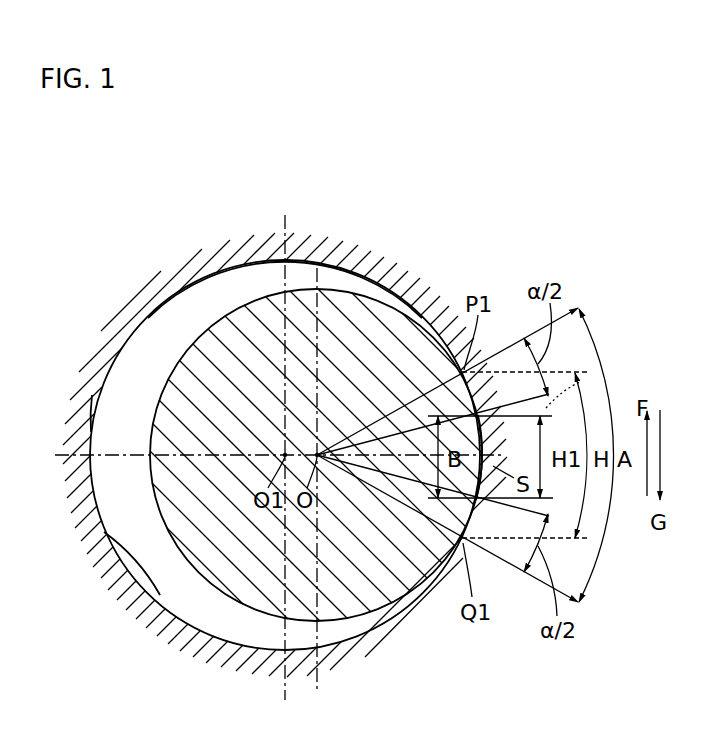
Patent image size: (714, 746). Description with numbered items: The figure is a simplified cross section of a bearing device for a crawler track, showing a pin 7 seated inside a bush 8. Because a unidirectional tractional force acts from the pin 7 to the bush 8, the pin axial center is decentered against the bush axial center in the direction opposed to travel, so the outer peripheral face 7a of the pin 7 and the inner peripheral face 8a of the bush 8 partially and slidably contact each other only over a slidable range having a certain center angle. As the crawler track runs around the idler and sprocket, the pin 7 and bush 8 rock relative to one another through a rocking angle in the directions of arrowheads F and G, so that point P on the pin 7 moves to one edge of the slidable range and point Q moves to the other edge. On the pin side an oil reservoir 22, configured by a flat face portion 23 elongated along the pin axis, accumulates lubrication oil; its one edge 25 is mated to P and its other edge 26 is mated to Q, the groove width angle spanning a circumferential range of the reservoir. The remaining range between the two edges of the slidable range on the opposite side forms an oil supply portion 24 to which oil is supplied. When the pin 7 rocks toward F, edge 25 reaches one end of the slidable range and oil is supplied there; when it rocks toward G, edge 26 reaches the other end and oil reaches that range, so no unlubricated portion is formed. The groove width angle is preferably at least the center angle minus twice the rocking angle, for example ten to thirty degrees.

The pin 7 is at (341, 285).
The outer peripheral face of the pin 7a is at (260, 296).
The bush 8 is at (177, 657).
The inner peripheral face of the bush 8a is at (115, 550).
The oil reservoir 22 is at (487, 448).
The flat face portion 23 is at (483, 508).
The oil supply portion 24 is at (99, 405).
The one edge of the oil reservoir 25 is at (475, 412).
The other edge of the oil reservoir 26 is at (475, 500).